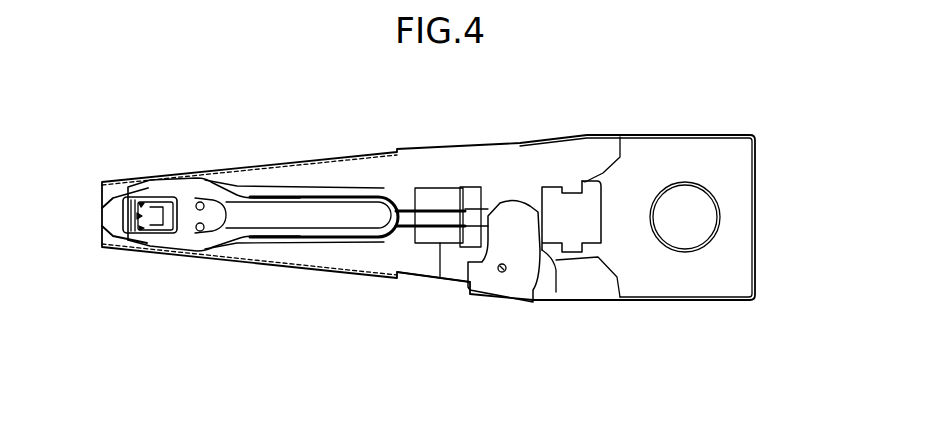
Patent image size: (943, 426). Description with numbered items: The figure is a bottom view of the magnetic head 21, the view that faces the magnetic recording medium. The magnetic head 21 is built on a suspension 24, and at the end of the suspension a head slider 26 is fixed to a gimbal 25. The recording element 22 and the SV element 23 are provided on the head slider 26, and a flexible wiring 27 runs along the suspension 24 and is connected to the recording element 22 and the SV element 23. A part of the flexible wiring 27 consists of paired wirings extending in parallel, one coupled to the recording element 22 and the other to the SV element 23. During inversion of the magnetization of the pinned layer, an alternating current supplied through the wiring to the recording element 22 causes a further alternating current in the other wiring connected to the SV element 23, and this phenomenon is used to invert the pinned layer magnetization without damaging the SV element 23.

The magnetic head 21 is at (725, 96).
The recording element 22 is at (122, 190).
The SV element 23 is at (122, 190).
The suspension 24 is at (350, 268).
The gimbal 25 is at (205, 252).
The head slider 26 is at (157, 195).
The flexible wiring 27 is at (302, 186).